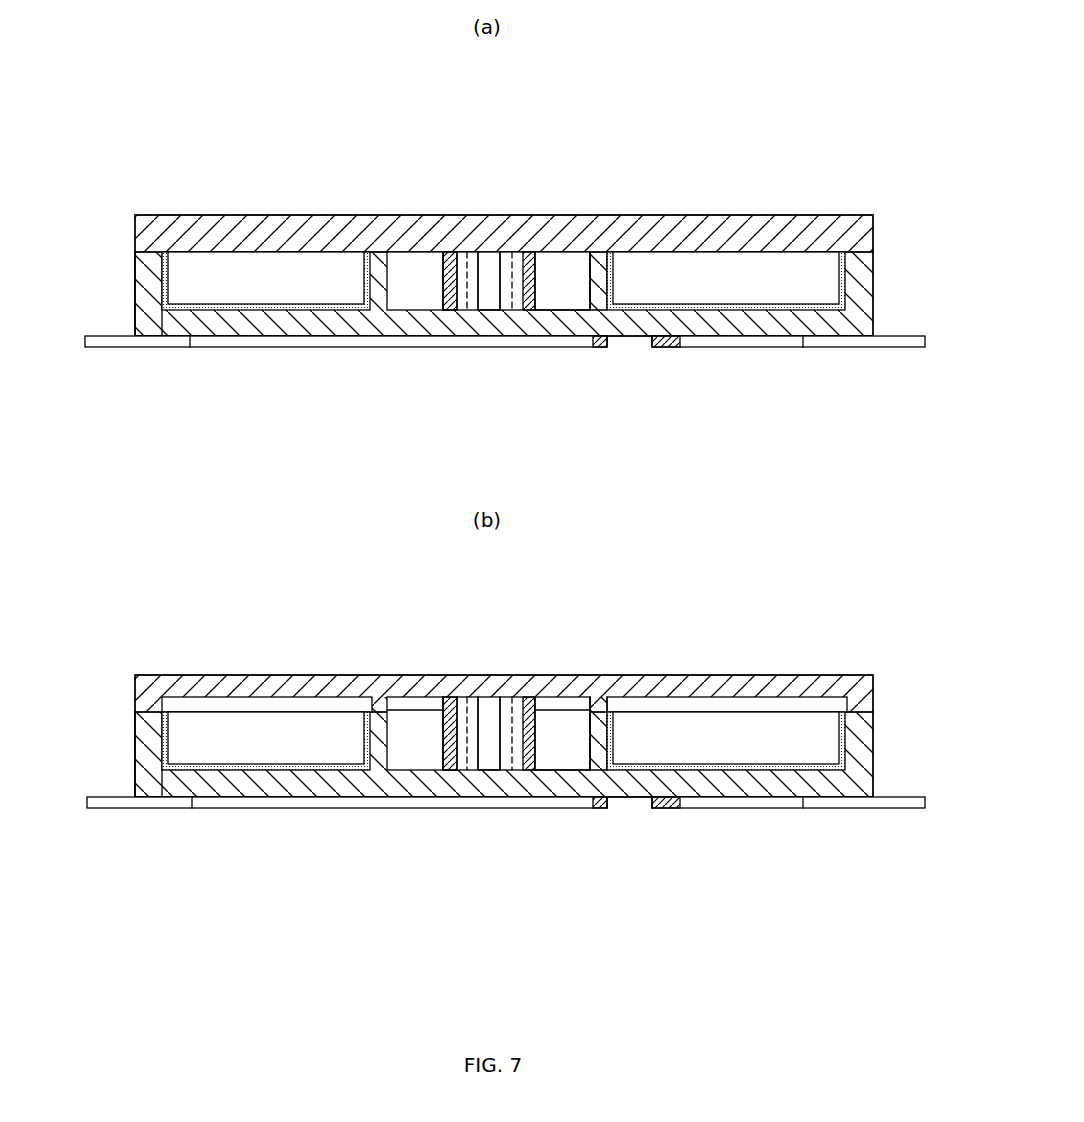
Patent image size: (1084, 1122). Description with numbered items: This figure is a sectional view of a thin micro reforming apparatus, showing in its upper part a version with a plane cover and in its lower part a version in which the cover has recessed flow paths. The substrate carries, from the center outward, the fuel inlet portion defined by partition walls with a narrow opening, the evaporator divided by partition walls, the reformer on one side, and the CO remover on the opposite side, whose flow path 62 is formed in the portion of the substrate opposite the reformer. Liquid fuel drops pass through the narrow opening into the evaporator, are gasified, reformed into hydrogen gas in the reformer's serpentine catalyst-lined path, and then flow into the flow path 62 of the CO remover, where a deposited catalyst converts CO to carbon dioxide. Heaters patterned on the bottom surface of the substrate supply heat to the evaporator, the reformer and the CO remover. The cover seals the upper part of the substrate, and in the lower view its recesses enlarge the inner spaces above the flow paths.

The flow path 62 is at (735, 270).